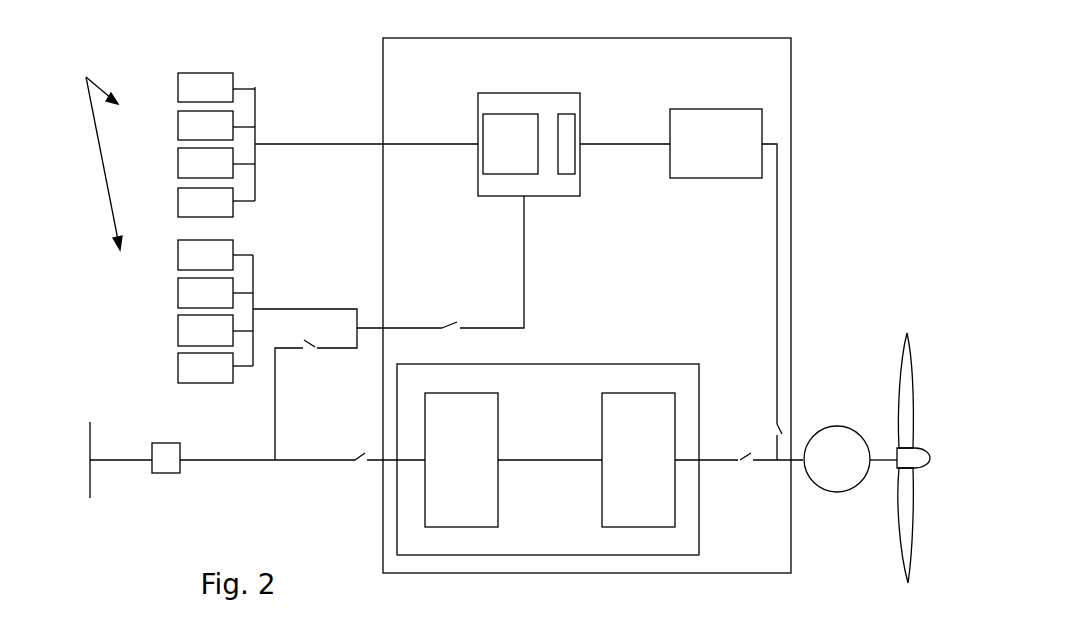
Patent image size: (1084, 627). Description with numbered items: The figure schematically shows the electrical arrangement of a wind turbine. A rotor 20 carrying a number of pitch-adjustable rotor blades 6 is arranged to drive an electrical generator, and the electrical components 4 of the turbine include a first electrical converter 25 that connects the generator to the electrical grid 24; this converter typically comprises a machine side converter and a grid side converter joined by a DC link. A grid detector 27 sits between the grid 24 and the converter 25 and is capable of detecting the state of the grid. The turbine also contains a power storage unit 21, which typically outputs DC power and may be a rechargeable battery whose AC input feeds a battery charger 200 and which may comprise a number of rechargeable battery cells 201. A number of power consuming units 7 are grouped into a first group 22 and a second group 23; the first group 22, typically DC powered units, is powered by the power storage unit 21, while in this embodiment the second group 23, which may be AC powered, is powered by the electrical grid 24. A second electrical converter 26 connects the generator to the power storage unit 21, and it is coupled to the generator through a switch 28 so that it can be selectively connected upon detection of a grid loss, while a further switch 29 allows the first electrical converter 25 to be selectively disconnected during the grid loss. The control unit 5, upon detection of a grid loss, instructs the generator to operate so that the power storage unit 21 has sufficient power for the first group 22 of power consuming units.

The electrical components 4 is at (772, 53).
The control unit 5 is at (197, 82).
The pitch-adjustable rotor blades 6 is at (905, 543).
The power consuming units 7 is at (96, 151).
The rotor 20 is at (883, 456).
The power storage unit 21 is at (552, 149).
The first group of power consuming units 22 is at (322, 128).
The second group of power consuming units 23 is at (255, 265).
The electrical grid 24 is at (88, 440).
The first electrical converter 25 is at (565, 377).
The second electrical converter 26 is at (692, 112).
The grid detector 27 is at (167, 452).
The switch 28 is at (782, 434).
The switch 29 is at (748, 455).
The battery charger 200 is at (567, 162).
The rechargeable battery cells 201 is at (498, 162).